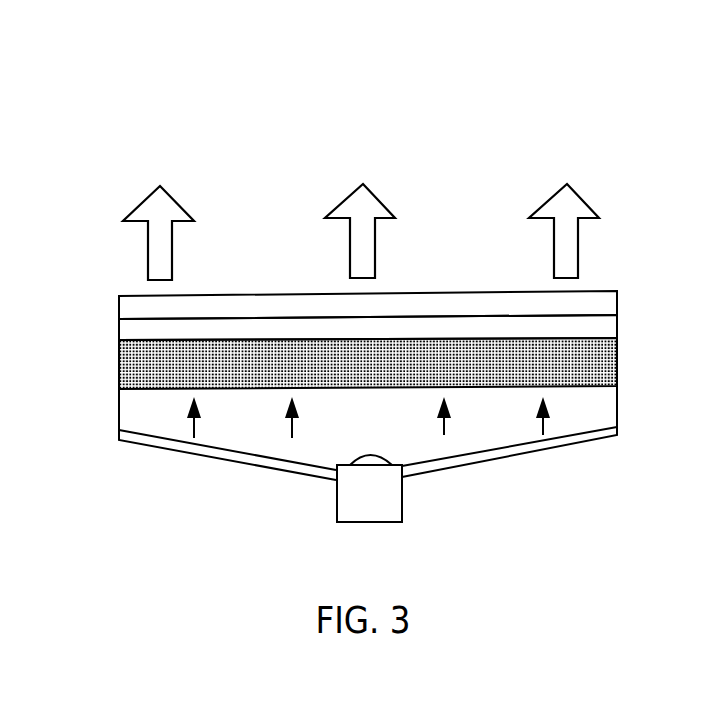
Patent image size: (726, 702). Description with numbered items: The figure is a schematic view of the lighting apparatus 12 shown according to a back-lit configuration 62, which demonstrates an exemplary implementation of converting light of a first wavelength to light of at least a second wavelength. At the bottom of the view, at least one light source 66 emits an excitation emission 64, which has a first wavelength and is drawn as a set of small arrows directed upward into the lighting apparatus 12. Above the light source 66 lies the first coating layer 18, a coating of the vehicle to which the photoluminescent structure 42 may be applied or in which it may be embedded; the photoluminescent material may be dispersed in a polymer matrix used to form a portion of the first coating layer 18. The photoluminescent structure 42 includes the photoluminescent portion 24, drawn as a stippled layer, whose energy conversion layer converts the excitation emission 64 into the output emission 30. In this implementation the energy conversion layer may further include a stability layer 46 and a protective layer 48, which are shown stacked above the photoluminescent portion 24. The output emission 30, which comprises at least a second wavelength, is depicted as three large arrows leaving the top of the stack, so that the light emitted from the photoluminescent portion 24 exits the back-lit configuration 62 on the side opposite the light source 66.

The lighting apparatus 12 is at (364, 288).
The back-lit configuration 62 is at (364, 288).
The first coating layer 18 is at (113, 412).
The photoluminescent portion 24 is at (610, 360).
The output emission 30 is at (164, 255).
The photoluminescent structure 42 is at (368, 332).
The stability layer 46 is at (610, 323).
The protective layer 48 is at (610, 303).
The excitation emission 64 is at (288, 430).
The light source 66 is at (358, 502).